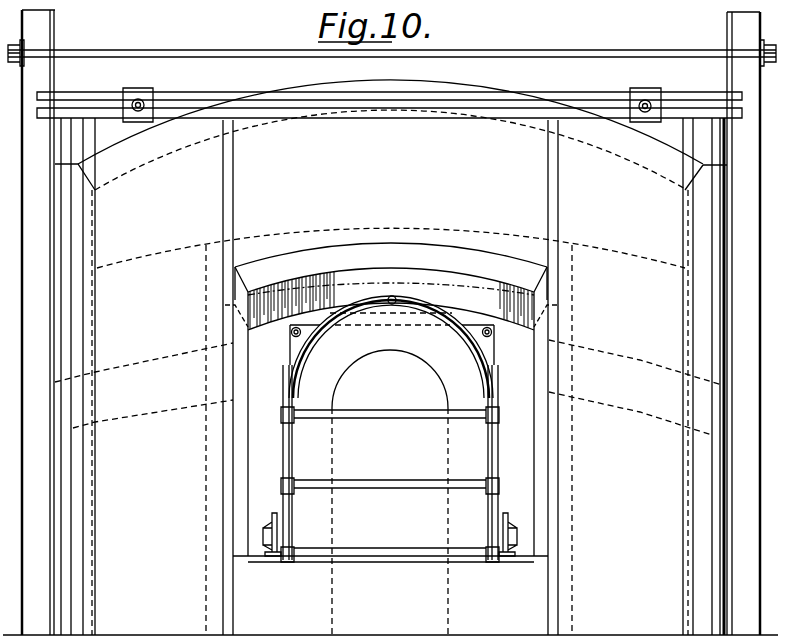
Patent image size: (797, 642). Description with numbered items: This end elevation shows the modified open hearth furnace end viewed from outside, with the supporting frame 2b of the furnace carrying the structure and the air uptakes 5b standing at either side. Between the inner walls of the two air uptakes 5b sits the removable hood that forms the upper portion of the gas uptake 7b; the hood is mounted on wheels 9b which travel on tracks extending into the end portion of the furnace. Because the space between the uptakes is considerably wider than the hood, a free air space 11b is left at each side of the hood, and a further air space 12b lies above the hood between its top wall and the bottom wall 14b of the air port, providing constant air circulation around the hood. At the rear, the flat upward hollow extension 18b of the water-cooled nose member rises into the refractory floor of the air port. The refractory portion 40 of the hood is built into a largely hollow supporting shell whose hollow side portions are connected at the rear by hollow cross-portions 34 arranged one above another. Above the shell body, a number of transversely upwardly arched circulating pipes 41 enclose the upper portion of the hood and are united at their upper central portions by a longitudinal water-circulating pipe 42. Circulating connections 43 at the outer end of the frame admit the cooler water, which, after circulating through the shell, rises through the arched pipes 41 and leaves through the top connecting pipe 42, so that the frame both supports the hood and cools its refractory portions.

The supporting frame 2b is at (568, 101).
The air uptakes 5b is at (391, 357).
The gas uptake 7b is at (390, 587).
The wheels 9b is at (512, 514).
The air space 11b is at (578, 473).
The air space 12b is at (391, 299).
The bottom wall of the air port 14b is at (391, 271).
The flat upward hollow extension 18b is at (488, 346).
The hollow cross-portions 34 is at (390, 432).
The refractory portion of the hood 40 is at (417, 348).
The arched circulating pipes 41 is at (433, 316).
The longitudinal water-circulating pipe 42 is at (393, 297).
The circulating connections 43 is at (285, 446).